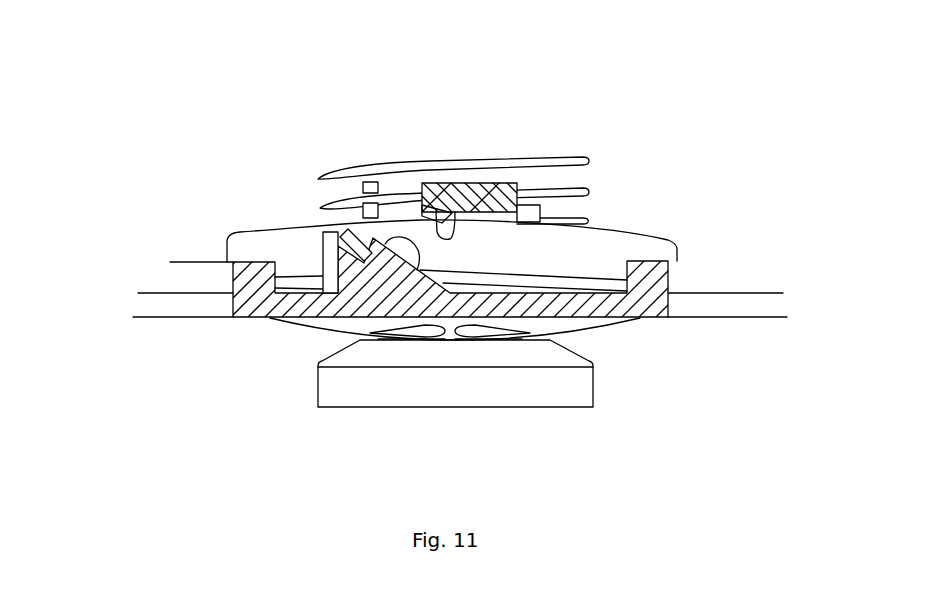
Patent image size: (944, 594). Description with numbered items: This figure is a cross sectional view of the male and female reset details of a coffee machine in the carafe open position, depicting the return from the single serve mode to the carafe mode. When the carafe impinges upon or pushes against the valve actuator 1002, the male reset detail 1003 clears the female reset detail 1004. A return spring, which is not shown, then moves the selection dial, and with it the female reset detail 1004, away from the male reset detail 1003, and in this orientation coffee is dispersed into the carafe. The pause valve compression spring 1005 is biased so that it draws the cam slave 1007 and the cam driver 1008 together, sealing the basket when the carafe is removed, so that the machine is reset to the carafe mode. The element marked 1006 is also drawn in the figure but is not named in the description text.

The cap 1002 is at (675, 258).
The slider block 1003 is at (428, 213).
The cam slider 1004 is at (364, 240).
The spring 1005 is at (587, 197).
The base plate 1006 is at (148, 292).
The pin 1007 is at (448, 240).
The dome protrusion 1008 is at (365, 306).